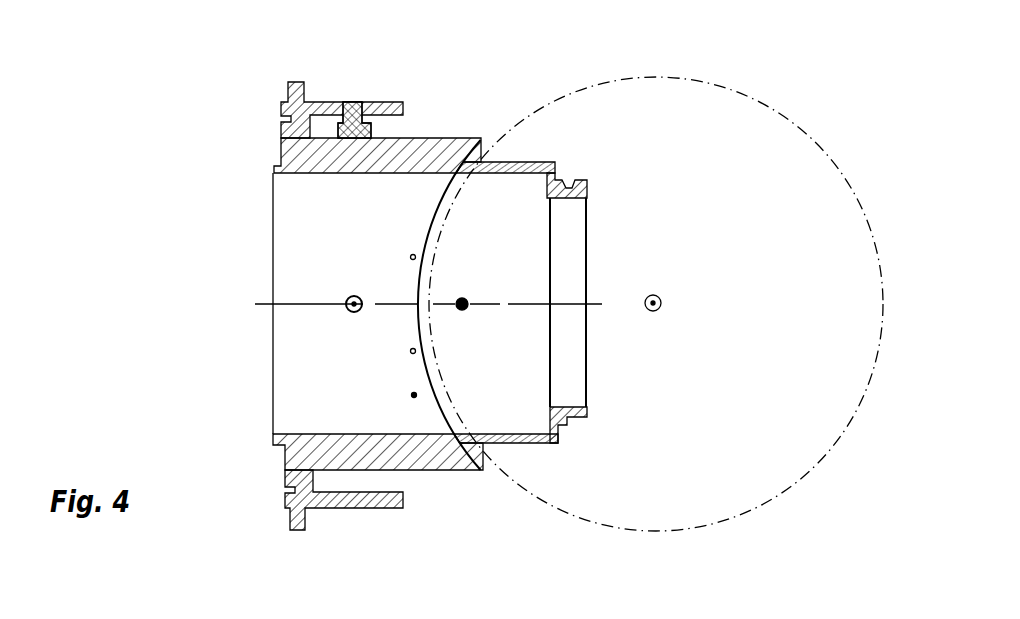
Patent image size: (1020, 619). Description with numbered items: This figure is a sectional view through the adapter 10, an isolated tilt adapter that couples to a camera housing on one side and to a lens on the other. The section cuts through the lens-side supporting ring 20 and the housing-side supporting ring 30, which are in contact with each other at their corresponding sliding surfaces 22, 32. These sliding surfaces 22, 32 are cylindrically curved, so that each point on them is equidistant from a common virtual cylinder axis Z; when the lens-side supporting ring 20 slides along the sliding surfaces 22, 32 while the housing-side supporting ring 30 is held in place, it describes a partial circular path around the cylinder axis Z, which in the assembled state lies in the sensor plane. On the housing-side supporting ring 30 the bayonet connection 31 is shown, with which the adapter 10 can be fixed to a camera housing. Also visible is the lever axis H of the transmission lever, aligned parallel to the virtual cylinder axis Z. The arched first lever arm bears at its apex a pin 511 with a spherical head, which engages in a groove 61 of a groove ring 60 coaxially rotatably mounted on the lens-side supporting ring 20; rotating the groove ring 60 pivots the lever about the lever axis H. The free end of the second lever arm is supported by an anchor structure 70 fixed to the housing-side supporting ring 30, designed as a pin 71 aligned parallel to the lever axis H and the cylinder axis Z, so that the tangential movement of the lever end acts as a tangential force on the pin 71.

The adapter 10 is at (208, 338).
The lens-side supporting ring 20 is at (418, 148).
The sliding surface 22 is at (452, 240).
The housing-side supporting ring 30 is at (503, 170).
The bayonet connection 31 is at (578, 186).
The sliding surface 32 is at (414, 395).
The groove ring 60 is at (296, 108).
The groove 61 is at (337, 74).
The pin 511 is at (348, 108).
The anchor structure 70 is at (592, 329).
The pin 71 is at (470, 305).
The lever axis H is at (347, 304).
The virtual cylinder axis Z is at (663, 300).